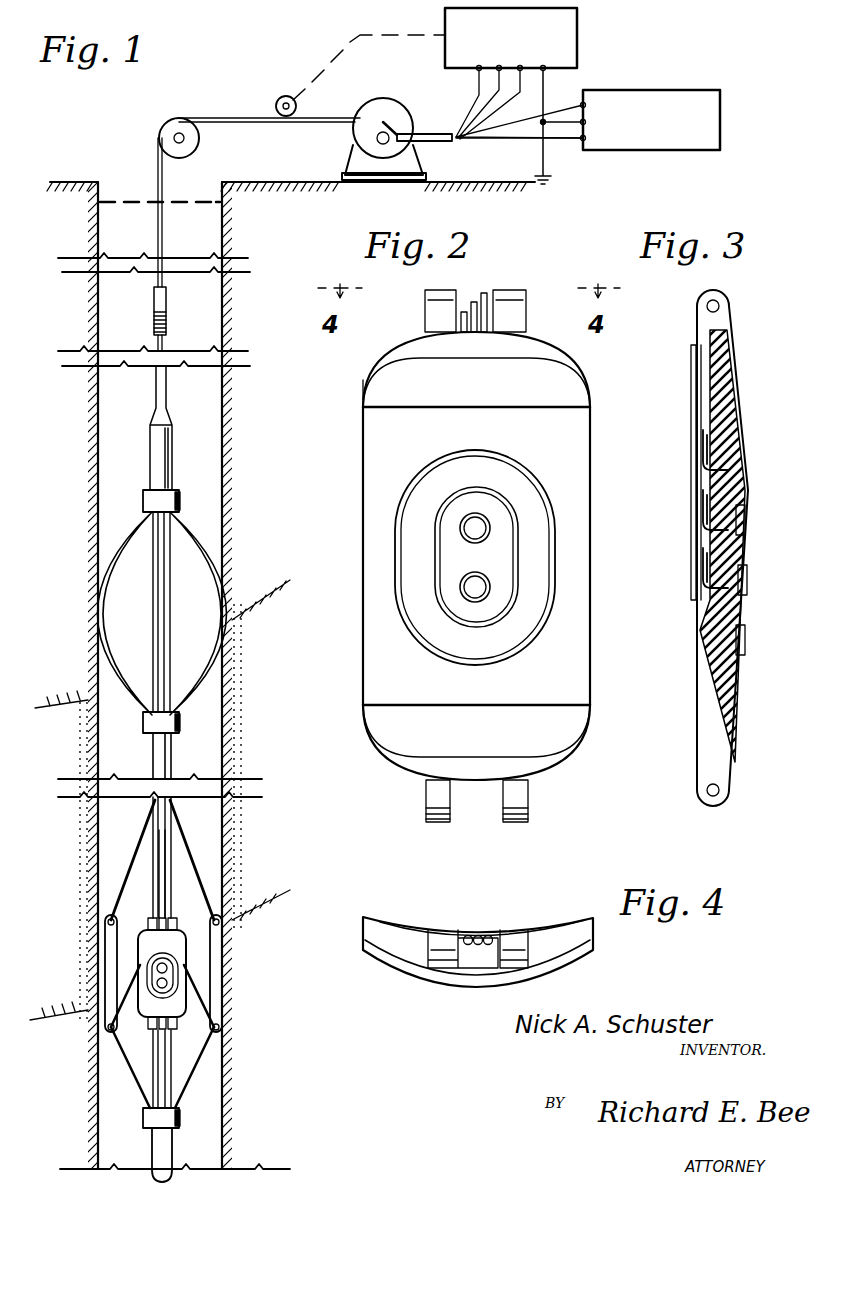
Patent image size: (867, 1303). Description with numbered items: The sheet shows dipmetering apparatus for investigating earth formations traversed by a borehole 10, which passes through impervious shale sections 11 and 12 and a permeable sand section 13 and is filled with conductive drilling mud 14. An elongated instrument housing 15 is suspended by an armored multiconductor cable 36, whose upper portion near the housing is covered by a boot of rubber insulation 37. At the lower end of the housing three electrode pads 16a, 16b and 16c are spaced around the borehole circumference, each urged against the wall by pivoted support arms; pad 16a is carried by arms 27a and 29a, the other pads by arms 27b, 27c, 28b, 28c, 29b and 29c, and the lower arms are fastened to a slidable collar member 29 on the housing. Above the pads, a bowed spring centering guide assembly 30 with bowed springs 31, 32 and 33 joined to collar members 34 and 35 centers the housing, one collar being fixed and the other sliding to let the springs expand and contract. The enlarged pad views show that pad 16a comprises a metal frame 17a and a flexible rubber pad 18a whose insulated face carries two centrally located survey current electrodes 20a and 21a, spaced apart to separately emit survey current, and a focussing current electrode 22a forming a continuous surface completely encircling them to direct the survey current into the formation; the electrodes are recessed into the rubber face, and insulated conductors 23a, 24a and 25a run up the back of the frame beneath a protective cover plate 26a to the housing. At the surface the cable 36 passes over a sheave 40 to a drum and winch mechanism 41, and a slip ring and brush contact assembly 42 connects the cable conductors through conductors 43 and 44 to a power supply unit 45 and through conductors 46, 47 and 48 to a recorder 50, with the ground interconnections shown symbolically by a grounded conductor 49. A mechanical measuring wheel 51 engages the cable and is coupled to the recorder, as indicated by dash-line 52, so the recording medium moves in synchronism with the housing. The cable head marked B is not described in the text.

In FIG. 1, the borehole 10 is at (95, 435).
In FIG. 1, the impervious section 11 is at (82, 509).
In FIG. 1, the impervious section 12 is at (78, 1049).
In FIG. 1, the permeable section 13 is at (72, 752).
In FIG. 1, the drilling mud 14 is at (196, 242).
In FIG. 1, the instrument housing 15 is at (166, 808).
In FIG. 1, the electrode pad 16a is at (194, 957).
In FIG. 2, the electrode pad 16a is at (387, 776).
In FIG. 3, the electrode pad 16a is at (688, 668).
In FIG. 4, the electrode pad 16a is at (559, 906).
In FIG. 1, the electrode pad 16b is at (102, 944).
In FIG. 1, the electrode pad 16c is at (232, 943).
In FIG. 2, the metal frame 17a is at (535, 338).
In FIG. 3, the metal frame 17a is at (704, 640).
In FIG. 4, the metal frame 17a is at (400, 935).
In FIG. 2, the flexible rubber pad 18a is at (480, 437).
In FIG. 3, the flexible rubber pad 18a is at (740, 690).
In FIG. 4, the flexible rubber pad 18a is at (392, 980).
In FIG. 2, the survey current electrode 20a is at (475, 515).
In FIG. 3, the survey current electrode 20a is at (746, 515).
In FIG. 2, the survey current electrode 21a is at (478, 595).
In FIG. 3, the survey current electrode 21a is at (747, 578).
In FIG. 2, the focussing current electrode 22a is at (535, 556).
In FIG. 3, the focussing current electrode 22a is at (746, 645).
In FIG. 2, the insulated conductor 23a is at (476, 320).
In FIG. 3, the insulated conductor 23a is at (702, 505).
In FIG. 4, the insulated conductor 23a is at (478, 935).
In FIG. 2, the insulated conductor 24a is at (487, 300).
In FIG. 3, the insulated conductor 24a is at (702, 552).
In FIG. 4, the insulated conductor 24a is at (490, 935).
In FIG. 2, the insulated conductor 25a is at (461, 320).
In FIG. 3, the insulated conductor 25a is at (702, 455).
In FIG. 4, the insulated conductor 25a is at (466, 935).
In FIG. 3, the protective cover plate 26a is at (692, 415).
In FIG. 1, the support arm 27a is at (158, 852).
In FIG. 1, the support arm 27b is at (140, 835).
In FIG. 1, the support arm 27c is at (190, 848).
In FIG. 1, the support arm 28b is at (128, 978).
In FIG. 1, the support arm 28c is at (200, 985).
In FIG. 1, the slidable collar member 29 is at (180, 1120).
In FIG. 1, the support arm 29a is at (158, 1095).
In FIG. 1, the support arm 29b is at (120, 1065).
In FIG. 1, the support arm 29c is at (210, 1048).
In FIG. 1, the bowed spring centering guide assembly 30 is at (191, 607).
In FIG. 1, the bowed spring 31 is at (118, 560).
In FIG. 1, the bowed spring 32 is at (158, 606).
In FIG. 1, the bowed spring 33 is at (210, 660).
In FIG. 1, the collar member 34 is at (178, 732).
In FIG. 1, the collar member 35 is at (180, 498).
In FIG. 1, the armored multiconductor cable 36 is at (156, 160).
In FIG. 1, the boot of rubber insulation 37 is at (166, 382).
In FIG. 1, the sheave 40 is at (160, 125).
In FIG. 1, the drum and winch mechanism 41 is at (378, 112).
In FIG. 1, the slip ring and brush contact assembly 42 is at (392, 125).
In FIG. 1, the conductor 43 is at (452, 140).
In FIG. 1, the conductor 44 is at (495, 138).
In FIG. 1, the power supply unit 45 is at (722, 97).
In FIG. 1, the conductor 46 is at (477, 80).
In FIG. 1, the conductor 47 is at (489, 102).
In FIG. 1, the conductor 48 is at (485, 122).
In FIG. 1, the grounded conductor 49 is at (545, 155).
In FIG. 1, the recorder 50 is at (580, 15).
In FIG. 1, the mechanical measuring wheel 51 is at (275, 100).
In FIG. 1, the dash-line 52 is at (328, 60).
In FIG. 1, the cable head B is at (166, 322).